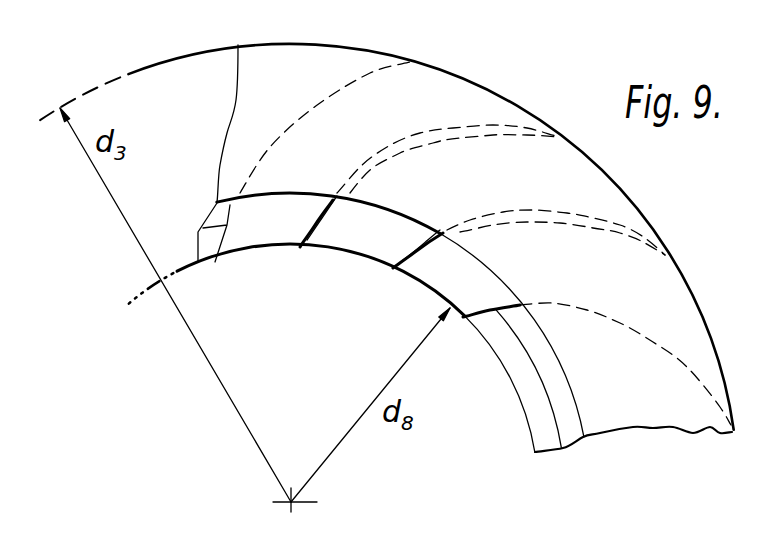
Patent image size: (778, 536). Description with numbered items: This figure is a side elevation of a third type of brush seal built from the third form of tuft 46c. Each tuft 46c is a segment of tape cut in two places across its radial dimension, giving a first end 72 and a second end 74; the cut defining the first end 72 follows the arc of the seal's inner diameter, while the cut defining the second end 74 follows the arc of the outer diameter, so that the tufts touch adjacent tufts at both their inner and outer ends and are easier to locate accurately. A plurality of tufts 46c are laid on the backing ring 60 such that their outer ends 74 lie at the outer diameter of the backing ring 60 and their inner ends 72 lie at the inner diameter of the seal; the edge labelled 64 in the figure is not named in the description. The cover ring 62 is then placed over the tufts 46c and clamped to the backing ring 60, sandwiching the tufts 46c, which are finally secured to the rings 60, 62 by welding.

The backing ring 60 is at (247, 80).
The cover ring 62 is at (217, 208).
The blade leading edge 64 is at (410, 62).
The first end 72 is at (254, 249).
The second end 74 is at (513, 102).
The tuft 46c is at (405, 267).